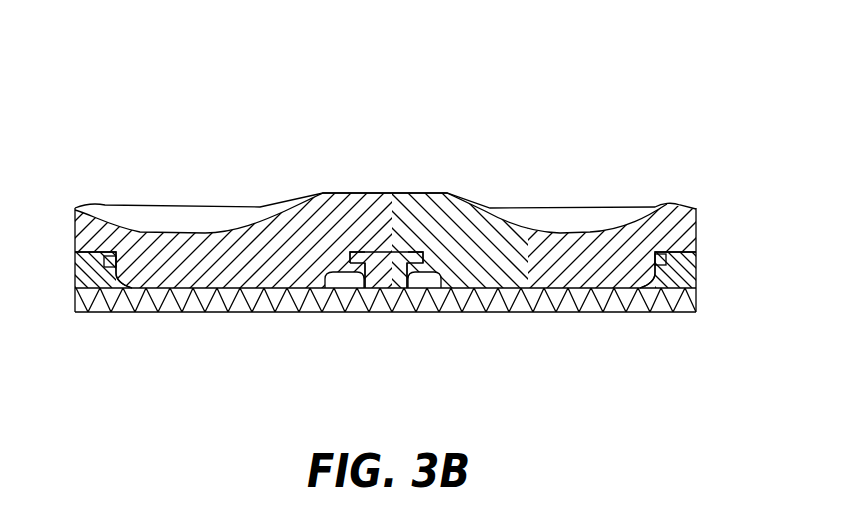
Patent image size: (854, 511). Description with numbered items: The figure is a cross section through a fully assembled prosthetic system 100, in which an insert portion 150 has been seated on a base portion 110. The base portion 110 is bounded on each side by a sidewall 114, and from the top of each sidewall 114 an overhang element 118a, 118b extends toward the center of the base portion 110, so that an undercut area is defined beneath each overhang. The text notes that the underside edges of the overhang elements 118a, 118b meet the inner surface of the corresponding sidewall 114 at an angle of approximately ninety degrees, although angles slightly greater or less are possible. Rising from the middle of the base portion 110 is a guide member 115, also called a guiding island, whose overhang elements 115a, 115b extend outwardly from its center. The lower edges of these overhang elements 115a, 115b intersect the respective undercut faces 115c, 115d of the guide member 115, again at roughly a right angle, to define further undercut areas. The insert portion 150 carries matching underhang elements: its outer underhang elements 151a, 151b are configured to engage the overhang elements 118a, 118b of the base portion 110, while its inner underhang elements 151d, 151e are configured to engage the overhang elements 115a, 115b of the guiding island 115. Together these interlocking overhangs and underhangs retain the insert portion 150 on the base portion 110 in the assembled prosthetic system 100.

The prosthetic system 100 is at (130, 145).
The base portion 110 is at (580, 303).
The sidewall 114 is at (75, 288).
The guide member 115 is at (384, 252).
The overhang element 115a is at (351, 252).
The overhang element 115b is at (420, 251).
The undercut face 115c is at (366, 280).
The undercut face 115d is at (405, 275).
The overhang element 118a is at (121, 266).
The overhang element 118b is at (668, 272).
The insert portion 150 is at (333, 192).
The underhang element 151a is at (107, 256).
The underhang element 151b is at (666, 262).
The underhang element 151d is at (334, 276).
The underhang element 151e is at (432, 278).